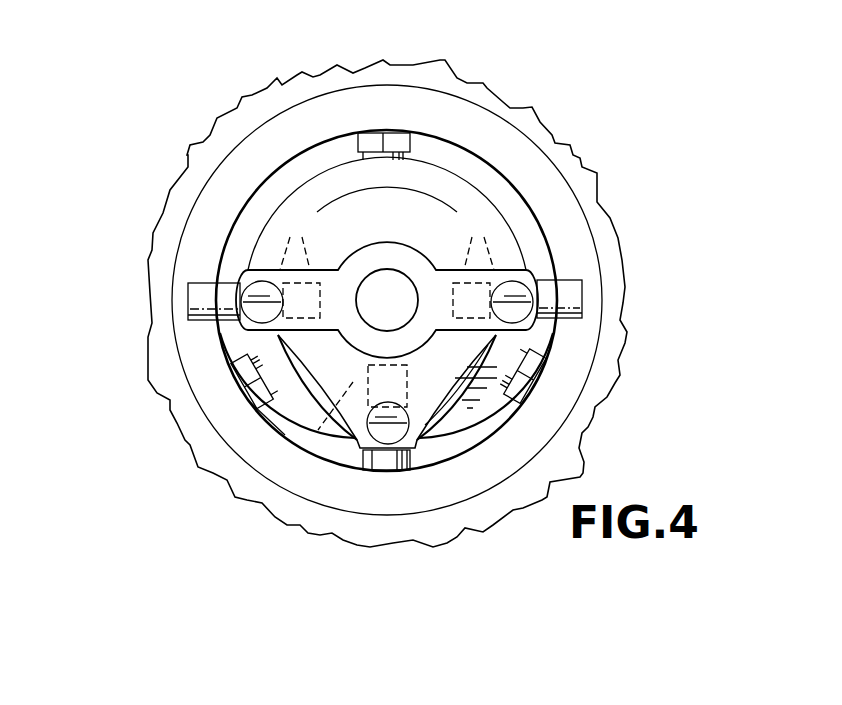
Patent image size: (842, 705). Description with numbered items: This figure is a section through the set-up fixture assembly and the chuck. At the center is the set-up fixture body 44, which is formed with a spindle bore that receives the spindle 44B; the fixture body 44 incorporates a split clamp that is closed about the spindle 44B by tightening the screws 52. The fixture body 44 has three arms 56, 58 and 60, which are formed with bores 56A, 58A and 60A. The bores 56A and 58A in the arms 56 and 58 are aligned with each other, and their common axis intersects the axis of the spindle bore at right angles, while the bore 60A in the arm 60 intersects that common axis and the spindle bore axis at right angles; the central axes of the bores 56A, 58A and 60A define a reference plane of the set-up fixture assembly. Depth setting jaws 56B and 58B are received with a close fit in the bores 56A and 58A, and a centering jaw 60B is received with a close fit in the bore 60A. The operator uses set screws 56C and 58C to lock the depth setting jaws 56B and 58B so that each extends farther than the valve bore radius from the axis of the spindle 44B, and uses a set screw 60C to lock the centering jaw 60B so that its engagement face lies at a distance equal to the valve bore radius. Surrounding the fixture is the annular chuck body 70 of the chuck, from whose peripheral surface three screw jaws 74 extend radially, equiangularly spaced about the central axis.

The set-up fixture body 44 is at (430, 215).
The spindle 44B is at (369, 313).
The screws 52 is at (413, 247).
The arm 56 is at (222, 333).
The bore 56A is at (301, 264).
The depth setting jaw 56B is at (190, 302).
The set screw 56C is at (257, 283).
The arm 58 is at (552, 337).
The bore 58A is at (472, 264).
The depth setting jaw 58B is at (582, 305).
The set screw 58C is at (517, 283).
The arm 60 is at (440, 477).
The bore 60A is at (386, 424).
The centering jaw 60B is at (390, 466).
The set screw 60C is at (360, 473).
The annular chuck body 70 is at (333, 186).
The screw jaws 74 is at (396, 135).